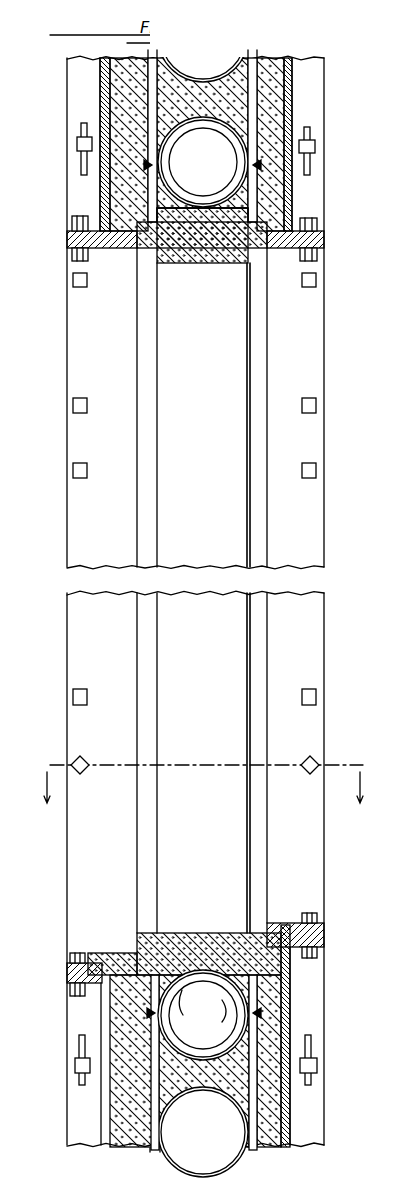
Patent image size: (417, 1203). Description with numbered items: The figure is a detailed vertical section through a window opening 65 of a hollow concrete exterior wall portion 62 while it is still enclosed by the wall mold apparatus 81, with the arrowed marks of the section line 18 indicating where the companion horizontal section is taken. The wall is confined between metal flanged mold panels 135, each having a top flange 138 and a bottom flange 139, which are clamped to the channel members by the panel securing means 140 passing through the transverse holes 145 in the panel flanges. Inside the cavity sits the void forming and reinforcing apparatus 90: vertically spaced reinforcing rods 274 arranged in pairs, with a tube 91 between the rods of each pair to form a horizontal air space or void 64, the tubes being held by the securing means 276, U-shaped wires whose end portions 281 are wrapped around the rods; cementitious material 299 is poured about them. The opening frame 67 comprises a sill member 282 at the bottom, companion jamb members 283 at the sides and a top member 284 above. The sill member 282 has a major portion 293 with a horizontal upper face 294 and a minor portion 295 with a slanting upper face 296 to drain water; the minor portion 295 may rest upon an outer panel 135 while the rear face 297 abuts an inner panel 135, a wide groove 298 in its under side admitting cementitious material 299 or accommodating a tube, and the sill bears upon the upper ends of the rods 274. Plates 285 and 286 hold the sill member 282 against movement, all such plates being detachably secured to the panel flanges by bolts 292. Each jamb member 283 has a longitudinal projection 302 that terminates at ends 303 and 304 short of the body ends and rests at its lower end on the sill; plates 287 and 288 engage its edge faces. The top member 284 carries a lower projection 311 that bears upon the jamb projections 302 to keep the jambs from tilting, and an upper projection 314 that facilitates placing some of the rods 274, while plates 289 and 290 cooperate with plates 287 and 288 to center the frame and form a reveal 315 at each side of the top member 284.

The section line 18- 18 is at (204, 775).
The hollow concrete exterior wall portion 62 is at (110, 115).
The horizontal air space or void 64 is at (215, 173).
The window opening 65 is at (232, 370).
The opening frame 67 is at (232, 330).
The wall mold apparatus 81 is at (293, 77).
The void forming and reinforcing apparatus 90 is at (255, 58).
The tube 91 is at (210, 1045).
The flanged mold panel 135 is at (100, 78).
The top flange 138 is at (100, 986).
The bottom flange 139 is at (72, 223).
The panel securing means 140 is at (318, 1064).
The transverse hole 145 is at (318, 1047).
The reinforcing rod 274 is at (110, 92).
The securing means 276 is at (258, 188).
The wire end portion 281 is at (146, 166).
The sill member 282 is at (190, 935).
The jamb member 283 is at (218, 693).
The top member 284 is at (223, 262).
The plate 285 is at (68, 968).
The plate 286 is at (330, 930).
The plate 287 is at (125, 835).
The plate 288 is at (317, 833).
The plate 289 is at (128, 250).
The plate 290 is at (318, 256).
The bolt 292 is at (80, 262).
The major portion of sill member 293 is at (217, 940).
The horizontal upper face 294 is at (185, 925).
The minor portion of sill member 295 is at (100, 953).
The slanting upper face 296 is at (108, 952).
The rear face of sill member 297 is at (298, 968).
The groove 298 is at (203, 1015).
The cementitious material 299 is at (283, 998).
The jamb projection 302 is at (160, 507).
The projection end 303 is at (170, 265).
The projection end 304 is at (160, 940).
The top member projection 311 is at (262, 255).
The top member projection 314 is at (243, 212).
The reveal 315 is at (135, 265).